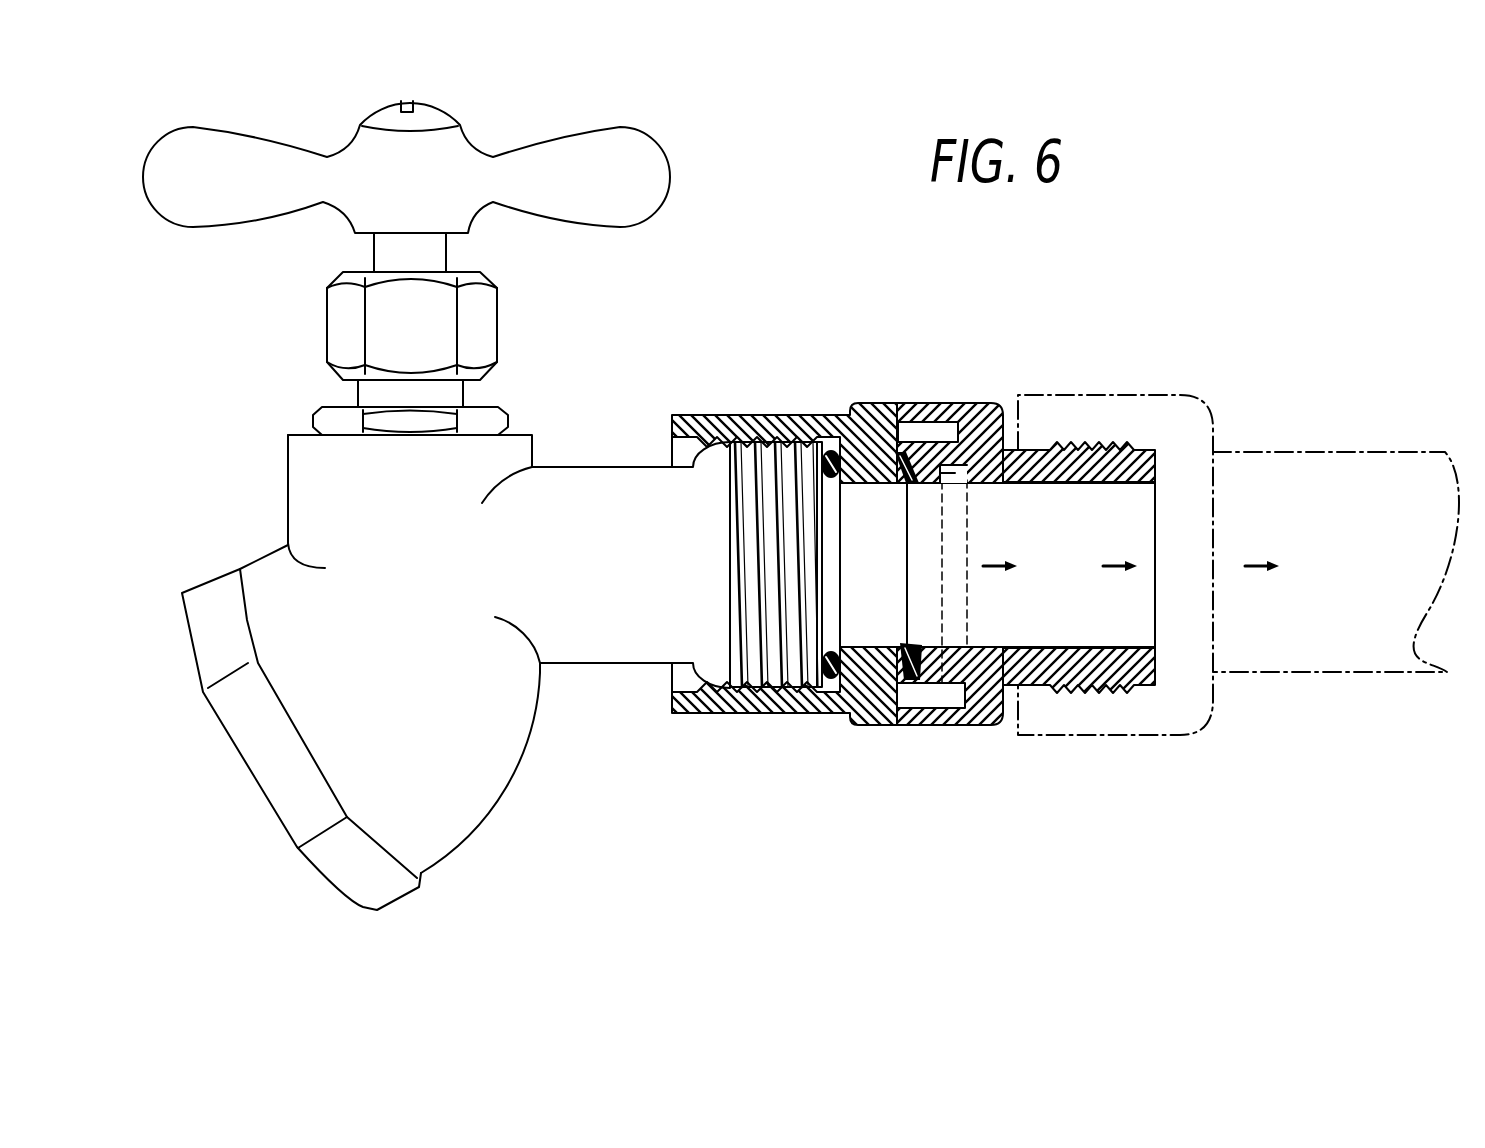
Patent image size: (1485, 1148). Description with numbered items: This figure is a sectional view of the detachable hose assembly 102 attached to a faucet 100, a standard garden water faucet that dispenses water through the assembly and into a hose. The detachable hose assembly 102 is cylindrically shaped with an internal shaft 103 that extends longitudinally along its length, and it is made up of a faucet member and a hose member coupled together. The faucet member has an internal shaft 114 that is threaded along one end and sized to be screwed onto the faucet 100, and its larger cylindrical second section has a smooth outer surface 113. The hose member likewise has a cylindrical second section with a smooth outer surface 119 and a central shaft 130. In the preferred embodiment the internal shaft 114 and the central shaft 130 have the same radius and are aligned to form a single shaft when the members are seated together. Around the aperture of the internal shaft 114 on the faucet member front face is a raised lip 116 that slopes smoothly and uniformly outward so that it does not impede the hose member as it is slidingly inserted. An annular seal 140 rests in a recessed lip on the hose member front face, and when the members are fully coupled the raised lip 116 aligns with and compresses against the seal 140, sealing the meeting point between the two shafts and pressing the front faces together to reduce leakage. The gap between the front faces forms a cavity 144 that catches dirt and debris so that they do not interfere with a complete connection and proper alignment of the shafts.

The faucet 100 is at (275, 337).
The detachable hose assembly 102 is at (1127, 272).
The internal shaft 103 is at (897, 600).
The smooth outer surface 113 is at (880, 403).
The internal shaft 114 is at (868, 532).
The raised lip 116 is at (828, 450).
The smooth outer surface 119 is at (902, 452).
The central shaft 130 is at (997, 516).
The annular seal 140 is at (912, 462).
The cavity 144 is at (930, 703).